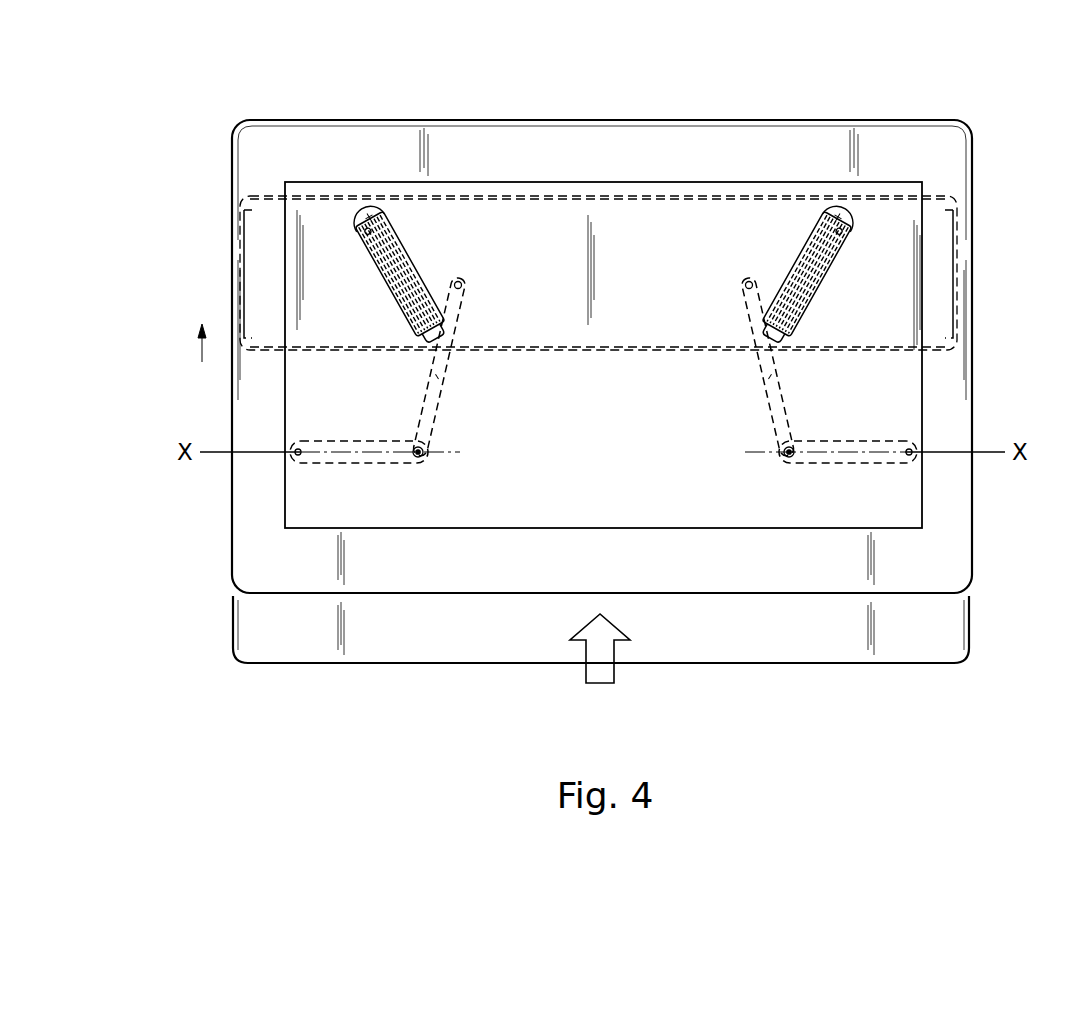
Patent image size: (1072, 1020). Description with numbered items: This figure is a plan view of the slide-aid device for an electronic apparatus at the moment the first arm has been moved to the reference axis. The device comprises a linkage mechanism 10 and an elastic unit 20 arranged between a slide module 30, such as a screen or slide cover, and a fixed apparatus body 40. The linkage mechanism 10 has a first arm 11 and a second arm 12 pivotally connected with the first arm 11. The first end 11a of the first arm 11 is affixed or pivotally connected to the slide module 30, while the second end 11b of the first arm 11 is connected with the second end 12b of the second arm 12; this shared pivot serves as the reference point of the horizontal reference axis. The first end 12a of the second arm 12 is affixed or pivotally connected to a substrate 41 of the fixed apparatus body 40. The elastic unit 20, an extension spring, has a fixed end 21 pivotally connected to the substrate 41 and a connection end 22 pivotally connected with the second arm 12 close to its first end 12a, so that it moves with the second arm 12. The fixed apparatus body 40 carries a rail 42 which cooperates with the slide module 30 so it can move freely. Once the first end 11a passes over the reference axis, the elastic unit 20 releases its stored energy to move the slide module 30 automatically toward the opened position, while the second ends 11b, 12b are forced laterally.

The linkage mechanism 10 is at (705, 492).
The first arm 11 is at (347, 466).
The first end of first arm 11a is at (297, 470).
The second end of first arm 11b is at (412, 468).
The second arm 12 is at (447, 372).
The first end of second arm 12a is at (468, 290).
The second end of second arm 12b is at (447, 438).
The elastic unit 20 is at (425, 258).
The fixed end 21 is at (372, 210).
The connection end 22 is at (415, 320).
The slide module 30 is at (628, 136).
The fixed apparatus body 40 is at (472, 645).
The substrate 41 is at (633, 326).
The rail 42 is at (232, 268).